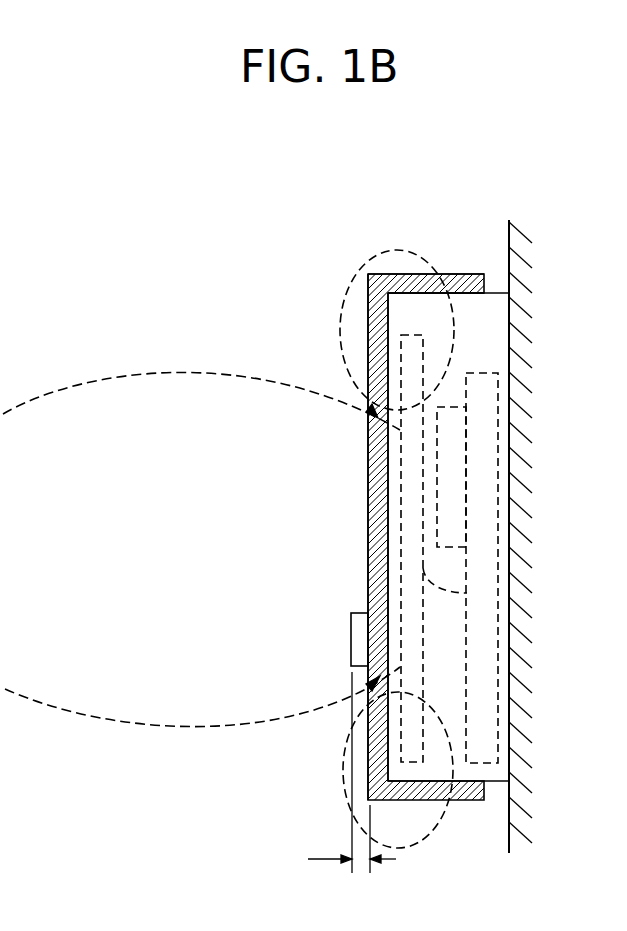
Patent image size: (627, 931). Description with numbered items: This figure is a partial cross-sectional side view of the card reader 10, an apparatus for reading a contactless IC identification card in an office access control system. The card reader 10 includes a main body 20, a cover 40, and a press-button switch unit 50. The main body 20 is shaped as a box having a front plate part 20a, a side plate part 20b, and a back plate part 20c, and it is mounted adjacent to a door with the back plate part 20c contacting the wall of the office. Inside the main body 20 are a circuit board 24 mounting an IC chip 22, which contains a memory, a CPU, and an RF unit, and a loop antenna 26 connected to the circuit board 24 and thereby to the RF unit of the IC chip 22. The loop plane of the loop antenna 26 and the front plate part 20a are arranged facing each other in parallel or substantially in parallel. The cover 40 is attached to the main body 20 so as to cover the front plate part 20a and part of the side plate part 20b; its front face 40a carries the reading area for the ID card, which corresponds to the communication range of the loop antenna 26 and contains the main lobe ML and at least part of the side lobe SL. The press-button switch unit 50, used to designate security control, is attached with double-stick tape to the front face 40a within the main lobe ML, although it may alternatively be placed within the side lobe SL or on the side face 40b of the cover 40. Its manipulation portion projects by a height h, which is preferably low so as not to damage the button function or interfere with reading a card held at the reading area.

The card reader 10 is at (557, 257).
The main body 20 is at (496, 293).
The front plate part 20a is at (387, 322).
The side plate part 20b is at (465, 274).
The back plate part 20c is at (510, 426).
The IC chip 22 is at (445, 407).
The circuit board 24 is at (484, 530).
The loop antenna 26 is at (423, 700).
The cover 40 is at (373, 274).
The front face 40a is at (368, 358).
The side face 40b is at (413, 274).
The press-button switch unit 50 is at (351, 640).
The main lobe ML is at (157, 372).
The side lobe SL is at (348, 274).
The height h is at (352, 772).